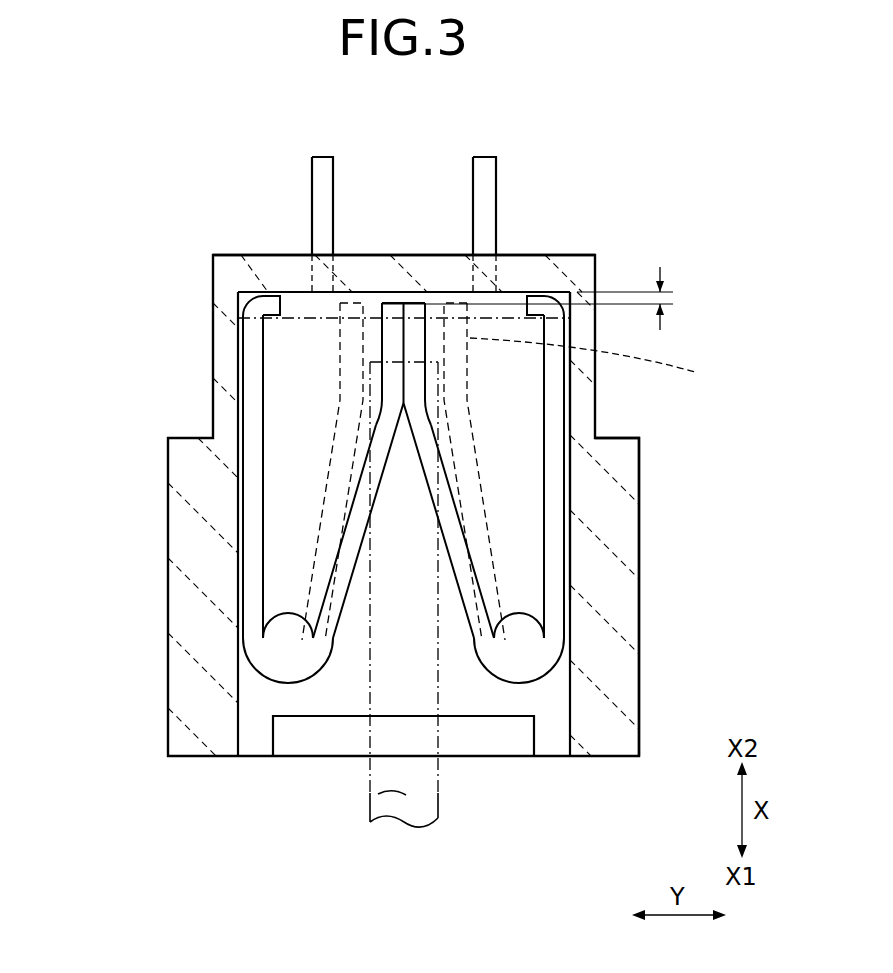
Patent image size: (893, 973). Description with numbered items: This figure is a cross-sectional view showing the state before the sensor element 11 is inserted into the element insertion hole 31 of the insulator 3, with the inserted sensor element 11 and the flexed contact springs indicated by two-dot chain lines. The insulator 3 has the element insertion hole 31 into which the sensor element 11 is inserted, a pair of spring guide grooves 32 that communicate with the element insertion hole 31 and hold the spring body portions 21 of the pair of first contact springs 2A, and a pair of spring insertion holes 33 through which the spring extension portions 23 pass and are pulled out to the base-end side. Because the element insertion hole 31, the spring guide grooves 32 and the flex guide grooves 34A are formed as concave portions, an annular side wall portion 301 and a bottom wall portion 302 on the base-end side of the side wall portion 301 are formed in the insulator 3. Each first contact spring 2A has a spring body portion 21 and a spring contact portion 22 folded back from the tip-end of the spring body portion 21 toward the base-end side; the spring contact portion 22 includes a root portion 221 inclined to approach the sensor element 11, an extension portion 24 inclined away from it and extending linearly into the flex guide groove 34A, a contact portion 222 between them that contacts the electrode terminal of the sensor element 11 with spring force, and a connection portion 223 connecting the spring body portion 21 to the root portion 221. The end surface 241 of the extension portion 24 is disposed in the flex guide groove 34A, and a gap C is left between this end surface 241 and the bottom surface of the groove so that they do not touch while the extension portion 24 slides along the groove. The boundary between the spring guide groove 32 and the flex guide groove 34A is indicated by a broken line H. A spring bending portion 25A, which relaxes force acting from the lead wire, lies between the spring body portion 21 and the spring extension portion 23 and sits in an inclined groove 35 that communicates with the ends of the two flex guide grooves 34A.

The insulator 3 is at (640, 672).
The side wall portion 301 is at (598, 473).
The bottom wall portion 302 is at (548, 270).
The element insertion hole 31 is at (442, 585).
The spring guide groove 32 is at (516, 428).
The spring insertion hole 33 is at (485, 255).
The flex guide groove 34A is at (447, 300).
The inclined groove 35 is at (262, 305).
The gap C is at (535, 298).
The broken line H is at (592, 365).
The first contact spring 2A is at (311, 453).
The spring extension portion 23 is at (323, 192).
The spring body portion 21 is at (253, 503).
The spring contact portion 22 is at (352, 545).
The root portion 221 is at (340, 610).
The contact portion 222 is at (390, 422).
The connection portion 223 is at (288, 668).
The extension portion 24 is at (393, 350).
The end surface 241 is at (395, 300).
The spring bending portion 25A is at (276, 300).
The sensor element 11 is at (370, 793).